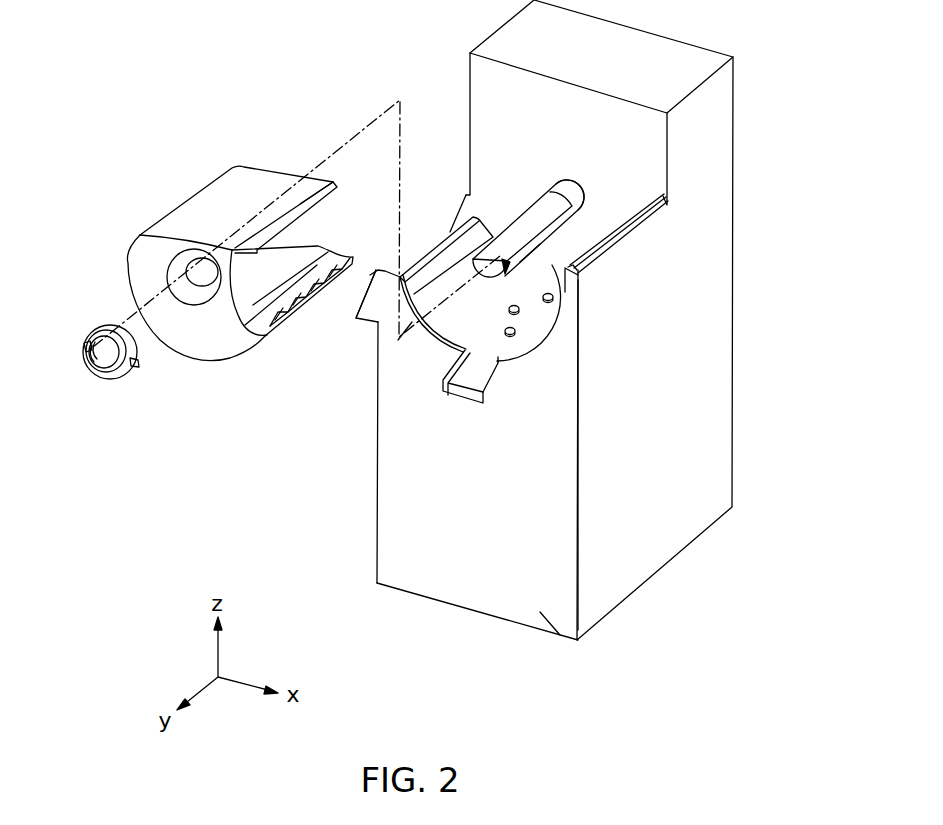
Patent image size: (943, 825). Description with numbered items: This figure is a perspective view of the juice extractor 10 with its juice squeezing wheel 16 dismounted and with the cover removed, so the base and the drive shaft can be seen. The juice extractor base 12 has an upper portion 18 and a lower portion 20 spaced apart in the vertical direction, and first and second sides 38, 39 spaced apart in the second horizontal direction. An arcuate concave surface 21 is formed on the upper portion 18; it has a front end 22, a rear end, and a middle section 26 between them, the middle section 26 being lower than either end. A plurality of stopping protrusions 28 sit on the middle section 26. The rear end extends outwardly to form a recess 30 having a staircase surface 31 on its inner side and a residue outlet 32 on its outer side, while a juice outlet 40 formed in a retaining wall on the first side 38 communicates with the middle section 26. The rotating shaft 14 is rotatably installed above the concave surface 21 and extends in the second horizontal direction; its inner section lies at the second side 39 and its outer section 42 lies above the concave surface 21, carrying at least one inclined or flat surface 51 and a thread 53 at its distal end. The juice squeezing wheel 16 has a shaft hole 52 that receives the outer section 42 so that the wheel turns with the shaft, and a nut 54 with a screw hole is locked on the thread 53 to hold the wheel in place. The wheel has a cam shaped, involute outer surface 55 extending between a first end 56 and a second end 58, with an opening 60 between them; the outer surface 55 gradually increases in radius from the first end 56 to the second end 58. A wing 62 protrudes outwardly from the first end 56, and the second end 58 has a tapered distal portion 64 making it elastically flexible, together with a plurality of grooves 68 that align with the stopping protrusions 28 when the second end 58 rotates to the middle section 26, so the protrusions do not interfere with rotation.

The juice extractor 10 is at (398, 65).
The juice extractor base 12 is at (655, 532).
The rotating shaft 14 is at (582, 190).
The juice squeezing wheel 16 is at (176, 205).
The upper portion 18 is at (408, 378).
The lower portion 20 is at (476, 614).
The arcuate concave surface 21 is at (508, 348).
The front end 22 is at (662, 204).
The middle section 26 is at (442, 352).
The stopping protrusions 28 is at (517, 333).
The recess 30 is at (448, 265).
The staircase surface 31 is at (398, 340).
The residue outlet 32 is at (413, 270).
The first side 38 is at (540, 612).
The second side 39 is at (734, 88).
The juice outlet 40 is at (462, 390).
The outer section 42 is at (540, 242).
The inclined or flat surface 51 is at (524, 230).
The shaft hole 52 is at (201, 290).
The thread 53 is at (508, 261).
The nut 54 is at (110, 371).
The outer surface 55 is at (128, 283).
The first end 56 is at (288, 204).
The second end 58 is at (258, 343).
The opening 60 is at (244, 328).
The wing 62 is at (317, 178).
The tapered distal portion 64 is at (348, 255).
The grooves 68 is at (312, 300).